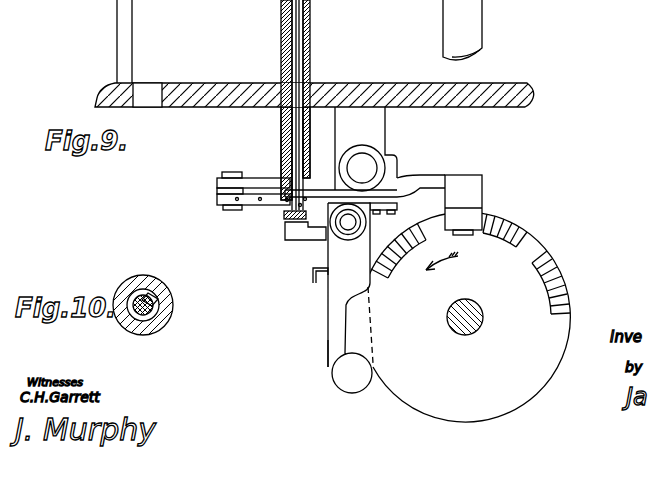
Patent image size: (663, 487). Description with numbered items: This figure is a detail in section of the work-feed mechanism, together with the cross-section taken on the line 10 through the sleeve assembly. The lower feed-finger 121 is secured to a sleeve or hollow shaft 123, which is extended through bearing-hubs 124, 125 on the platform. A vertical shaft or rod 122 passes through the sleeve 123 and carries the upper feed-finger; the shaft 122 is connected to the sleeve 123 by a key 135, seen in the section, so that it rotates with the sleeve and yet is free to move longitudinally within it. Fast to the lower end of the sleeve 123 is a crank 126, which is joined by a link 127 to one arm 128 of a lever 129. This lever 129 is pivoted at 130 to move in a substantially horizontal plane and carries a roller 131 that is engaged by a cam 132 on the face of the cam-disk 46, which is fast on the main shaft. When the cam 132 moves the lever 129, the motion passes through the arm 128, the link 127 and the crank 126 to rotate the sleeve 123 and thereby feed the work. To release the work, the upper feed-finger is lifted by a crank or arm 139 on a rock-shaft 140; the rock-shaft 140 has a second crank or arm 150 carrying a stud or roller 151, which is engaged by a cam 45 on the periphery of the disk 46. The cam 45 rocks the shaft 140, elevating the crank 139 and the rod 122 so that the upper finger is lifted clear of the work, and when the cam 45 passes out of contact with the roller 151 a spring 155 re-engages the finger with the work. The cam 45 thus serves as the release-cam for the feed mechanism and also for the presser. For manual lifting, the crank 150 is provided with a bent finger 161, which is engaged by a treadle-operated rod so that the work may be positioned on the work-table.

In FIG. 9, the lower feed-finger 121 is at (314, 53).
In FIG. 9, the bearing-hub 124 is at (306, 24).
In FIG. 9, the bearing-hub 125 is at (283, 120).
In FIG. 10, the bearing-hub 125 is at (164, 332).
In FIG. 9, the crank 126 is at (260, 177).
In FIG. 9, the section line 10 is at (289, 160).
In FIG. 9, the spring 155 is at (302, 193).
In FIG. 9, the link 127 is at (216, 190).
In FIG. 9, the arm 128 is at (272, 206).
In FIG. 9, the crank 139 is at (291, 236).
In FIG. 9, the rock-shaft 140 is at (348, 224).
In FIG. 9, the bent finger 161 is at (312, 281).
In FIG. 9, the cam 45 is at (340, 335).
In FIG. 9, the crank 150 is at (332, 352).
In FIG. 9, the roller 151 is at (340, 362).
In FIG. 9, the lever 129 is at (413, 181).
In FIG. 9, the pivot 130 is at (390, 212).
In FIG. 9, the roller 131 is at (457, 216).
In FIG. 9, the cam 132 is at (490, 218).
In FIG. 9, the disk 46 is at (515, 395).
In FIG. 10, the sleeve 123 is at (158, 291).
In FIG. 10, the shaft 122 is at (160, 301).
In FIG. 10, the key 135 is at (137, 326).